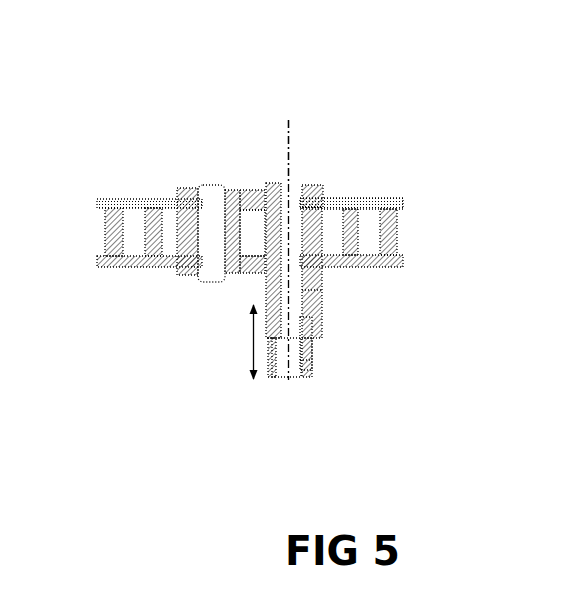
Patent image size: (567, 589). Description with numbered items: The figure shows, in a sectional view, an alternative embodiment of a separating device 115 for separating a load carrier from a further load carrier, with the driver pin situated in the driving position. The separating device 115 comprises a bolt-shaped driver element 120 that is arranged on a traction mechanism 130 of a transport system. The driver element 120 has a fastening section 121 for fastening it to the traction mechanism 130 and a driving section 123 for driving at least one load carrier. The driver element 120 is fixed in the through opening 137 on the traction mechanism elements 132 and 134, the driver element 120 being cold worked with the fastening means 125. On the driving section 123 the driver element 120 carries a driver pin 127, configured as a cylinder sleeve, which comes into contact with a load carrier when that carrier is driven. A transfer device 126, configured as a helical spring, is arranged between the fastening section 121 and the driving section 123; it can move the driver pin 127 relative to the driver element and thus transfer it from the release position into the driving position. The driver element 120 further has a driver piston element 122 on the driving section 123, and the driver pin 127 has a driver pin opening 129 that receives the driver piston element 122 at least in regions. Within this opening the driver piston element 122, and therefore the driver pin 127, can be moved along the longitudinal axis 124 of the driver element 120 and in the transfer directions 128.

The separating device 115 is at (113, 71).
The driver element 120 is at (289, 190).
The fastening section 121 is at (291, 222).
The driver piston element 122 is at (299, 340).
The driving section 123 is at (313, 317).
The longitudinal axis 124 is at (289, 135).
The fastening means 125 is at (276, 192).
The transfer device 126 is at (314, 299).
The driver pin 127 is at (307, 368).
The transfer directions 128 is at (253, 342).
The driver pin opening 129 is at (285, 363).
The traction mechanism 130 is at (345, 189).
The traction mechanism element 132 is at (330, 258).
The traction mechanism element 134 is at (308, 192).
The through opening 137 is at (272, 284).